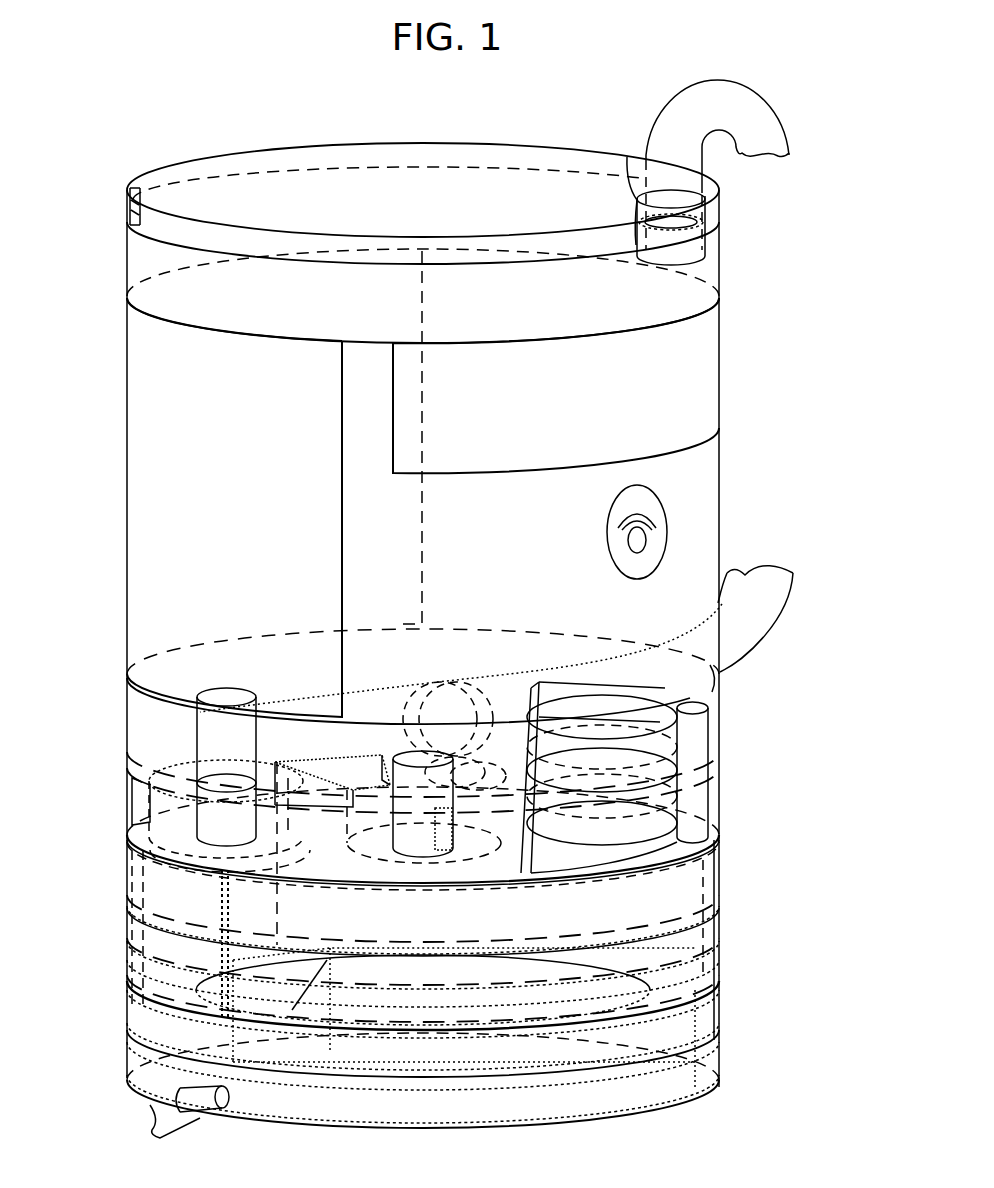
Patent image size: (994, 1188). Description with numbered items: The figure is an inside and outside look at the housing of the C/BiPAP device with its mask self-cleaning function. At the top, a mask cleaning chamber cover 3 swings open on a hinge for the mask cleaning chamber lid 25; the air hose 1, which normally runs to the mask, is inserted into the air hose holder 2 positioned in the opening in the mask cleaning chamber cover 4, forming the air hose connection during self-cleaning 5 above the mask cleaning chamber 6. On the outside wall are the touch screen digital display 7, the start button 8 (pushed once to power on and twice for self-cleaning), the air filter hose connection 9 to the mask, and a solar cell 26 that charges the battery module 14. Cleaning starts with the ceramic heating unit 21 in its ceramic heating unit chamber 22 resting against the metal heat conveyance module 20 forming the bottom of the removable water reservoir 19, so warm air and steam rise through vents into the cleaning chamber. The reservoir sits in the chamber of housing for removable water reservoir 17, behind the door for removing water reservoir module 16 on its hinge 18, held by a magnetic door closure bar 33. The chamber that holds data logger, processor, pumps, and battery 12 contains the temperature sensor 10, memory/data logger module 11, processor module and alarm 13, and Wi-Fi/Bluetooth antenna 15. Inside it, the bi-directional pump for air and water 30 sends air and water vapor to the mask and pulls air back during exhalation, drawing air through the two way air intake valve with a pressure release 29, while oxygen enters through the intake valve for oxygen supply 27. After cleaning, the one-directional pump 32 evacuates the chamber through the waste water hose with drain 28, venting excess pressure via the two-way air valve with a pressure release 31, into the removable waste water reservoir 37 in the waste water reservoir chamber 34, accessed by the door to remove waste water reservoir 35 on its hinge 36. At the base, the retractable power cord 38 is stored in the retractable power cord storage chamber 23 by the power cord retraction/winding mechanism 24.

The air hose 1 is at (717, 107).
The air hose holder 2 is at (642, 168).
The mask cleaning chamber cover 3 is at (455, 188).
The opening in mask cleaning chamber cover 4 is at (641, 197).
The air hose connection during self-cleaning 5 is at (680, 247).
The mask cleaning chamber 6 is at (680, 290).
The touch screen digital display 7 is at (680, 365).
The start button 8 is at (640, 535).
The air filter hose connection 9 is at (474, 690).
The temperature sensor 10 is at (610, 755).
The memory/data logger module 11 is at (600, 775).
The chamber that holds data logger, processor, pumps, and battery 12 is at (590, 795).
The processor module and alarm 13 is at (600, 815).
The battery module 14 is at (705, 820).
The Wi-Fi/Bluetooth antenna 15 is at (690, 845).
The door for removing water reservoir module 16 is at (708, 858).
The chamber of housing for removable water reservoir 17 is at (710, 892).
The hinge for opening door for removing water reservoir module 18 is at (717, 910).
The removable water reservoir 19 is at (697, 938).
The metal heat conveyance module 20 is at (640, 988).
The ceramic heating unit 21 is at (717, 1023).
The ceramic heating unit chamber 22 is at (703, 1042).
The retractable power cord storage chamber 23 is at (717, 1050).
The power cord retraction/winding mechanism 24 is at (703, 1070).
The hinge for mask cleaning chamber lid 25 is at (140, 215).
The solar cell 26 is at (175, 345).
The intake valve for oxygen supply 27 is at (410, 735).
The waste water hose with drain 28 is at (400, 757).
The two way air intake valve with a pressure release 29 is at (382, 768).
The bi-directional pump for air and water 30 is at (222, 762).
The two-way air valve with a pressure release 31 is at (360, 818).
The one-directional pump 32 is at (175, 830).
The magnetic door closure bar 33 is at (200, 858).
The waste water reservoir chamber 34 is at (290, 870).
The door to remove waste water reservoir 35 is at (130, 905).
The hinge for the door to remove the waste water reservoir 36 is at (133, 925).
The removable waste water reservoir 37 is at (200, 982).
The retractable power cord 38 is at (200, 1093).